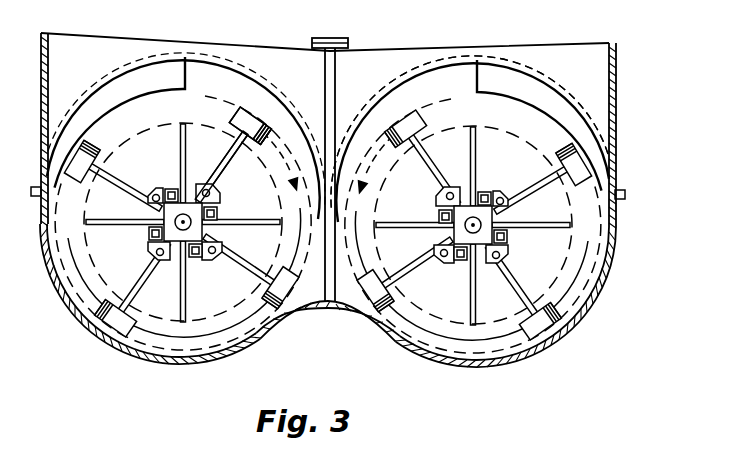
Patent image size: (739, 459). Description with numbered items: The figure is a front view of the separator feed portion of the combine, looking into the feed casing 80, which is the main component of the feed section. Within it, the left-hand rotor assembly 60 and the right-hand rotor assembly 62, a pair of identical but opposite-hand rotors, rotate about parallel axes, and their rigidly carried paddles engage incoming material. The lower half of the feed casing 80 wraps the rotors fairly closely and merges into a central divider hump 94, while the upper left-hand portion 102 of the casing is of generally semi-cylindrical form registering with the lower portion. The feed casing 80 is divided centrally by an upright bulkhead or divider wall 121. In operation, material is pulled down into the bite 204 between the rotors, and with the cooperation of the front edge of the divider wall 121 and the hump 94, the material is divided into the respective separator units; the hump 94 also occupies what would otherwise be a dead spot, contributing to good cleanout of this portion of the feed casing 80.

The left-hand rotor assembly 60 is at (515, 92).
The right-hand rotor assembly 62 is at (237, 93).
The feed casing 80 is at (648, 121).
The central divider hump 94 is at (347, 313).
The upper left-hand portion of the feed casing 102 is at (573, 59).
The upright bulkhead or divider wall 121 is at (338, 68).
The bite between the rotors 204 is at (366, 80).